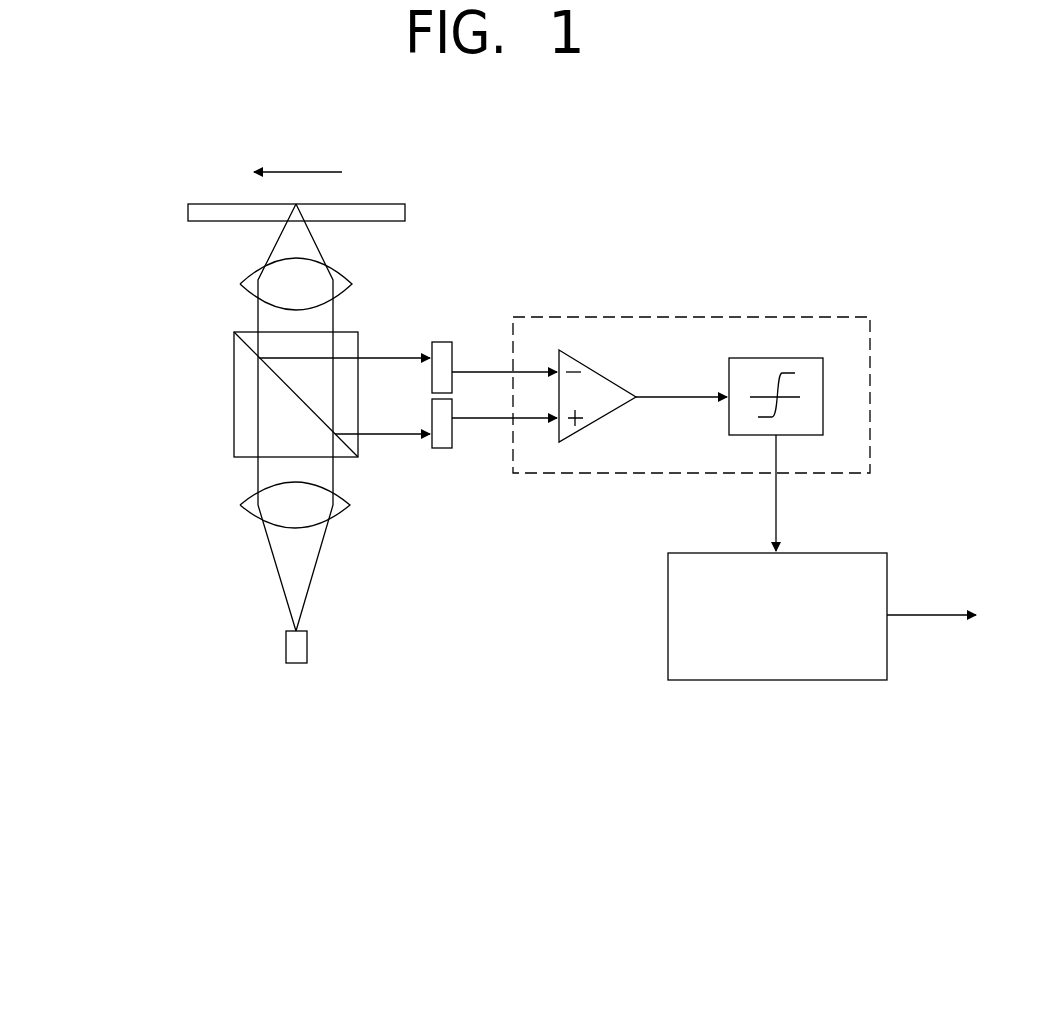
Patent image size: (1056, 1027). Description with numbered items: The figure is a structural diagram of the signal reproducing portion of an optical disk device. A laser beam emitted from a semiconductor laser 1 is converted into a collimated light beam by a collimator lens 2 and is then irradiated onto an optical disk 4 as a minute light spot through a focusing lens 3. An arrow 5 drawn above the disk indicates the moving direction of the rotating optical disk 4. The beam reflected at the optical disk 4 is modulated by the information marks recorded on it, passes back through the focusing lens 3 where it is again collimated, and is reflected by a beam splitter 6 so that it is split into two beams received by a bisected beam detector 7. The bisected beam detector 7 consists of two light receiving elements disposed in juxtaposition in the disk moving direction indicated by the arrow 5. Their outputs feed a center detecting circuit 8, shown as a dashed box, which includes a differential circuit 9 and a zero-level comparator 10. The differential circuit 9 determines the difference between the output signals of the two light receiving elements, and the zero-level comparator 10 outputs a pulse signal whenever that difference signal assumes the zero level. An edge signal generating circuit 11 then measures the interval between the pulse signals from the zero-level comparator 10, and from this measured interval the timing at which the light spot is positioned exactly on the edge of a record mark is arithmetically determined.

The semiconductor laser 1 is at (286, 650).
The collimator lens 2 is at (252, 513).
The focusing lens 3 is at (242, 285).
The optical disk 4 is at (218, 204).
The arrow 5 is at (297, 172).
The beam splitter 6 is at (280, 378).
The bisected beam detector 7 is at (437, 342).
The center detecting circuit 8 is at (604, 473).
The differential circuit 9 is at (597, 371).
The zero-level comparator 10 is at (776, 358).
The edge signal generating circuit 11 is at (765, 680).